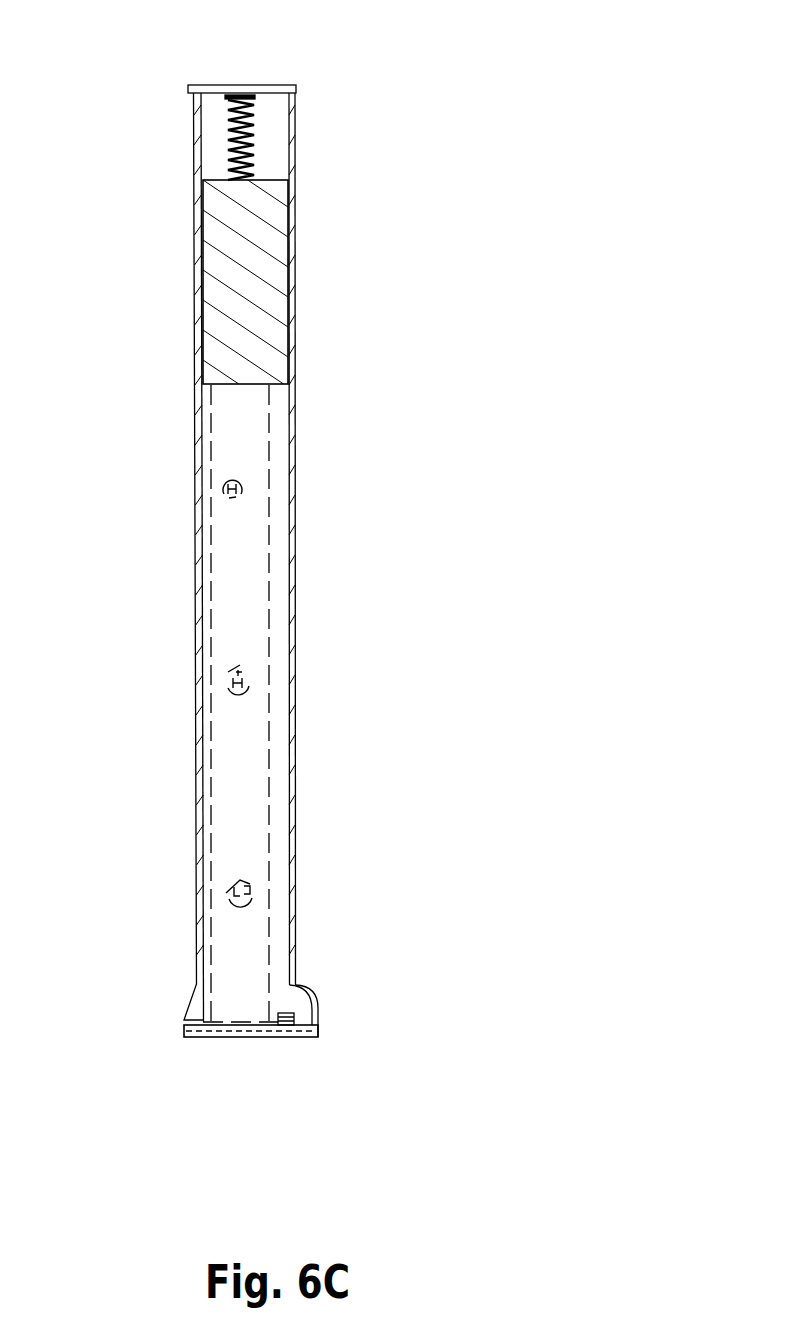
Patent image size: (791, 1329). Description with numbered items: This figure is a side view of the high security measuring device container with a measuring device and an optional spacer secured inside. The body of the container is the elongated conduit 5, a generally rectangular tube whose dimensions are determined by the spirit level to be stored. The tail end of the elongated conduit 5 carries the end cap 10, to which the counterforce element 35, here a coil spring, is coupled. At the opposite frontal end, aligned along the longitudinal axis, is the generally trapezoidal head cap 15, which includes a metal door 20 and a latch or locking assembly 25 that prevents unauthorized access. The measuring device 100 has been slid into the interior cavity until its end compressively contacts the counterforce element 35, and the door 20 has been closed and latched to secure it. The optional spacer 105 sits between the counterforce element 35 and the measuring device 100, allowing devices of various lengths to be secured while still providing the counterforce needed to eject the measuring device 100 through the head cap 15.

The elongated conduit 5 is at (196, 622).
The end cap 10 is at (262, 85).
The head cap 15 is at (312, 992).
The door 20 is at (253, 1038).
The locking assembly 25 is at (285, 1038).
The counterforce element 35 is at (252, 145).
The measuring device 100 is at (272, 757).
The spacer 105 is at (258, 297).